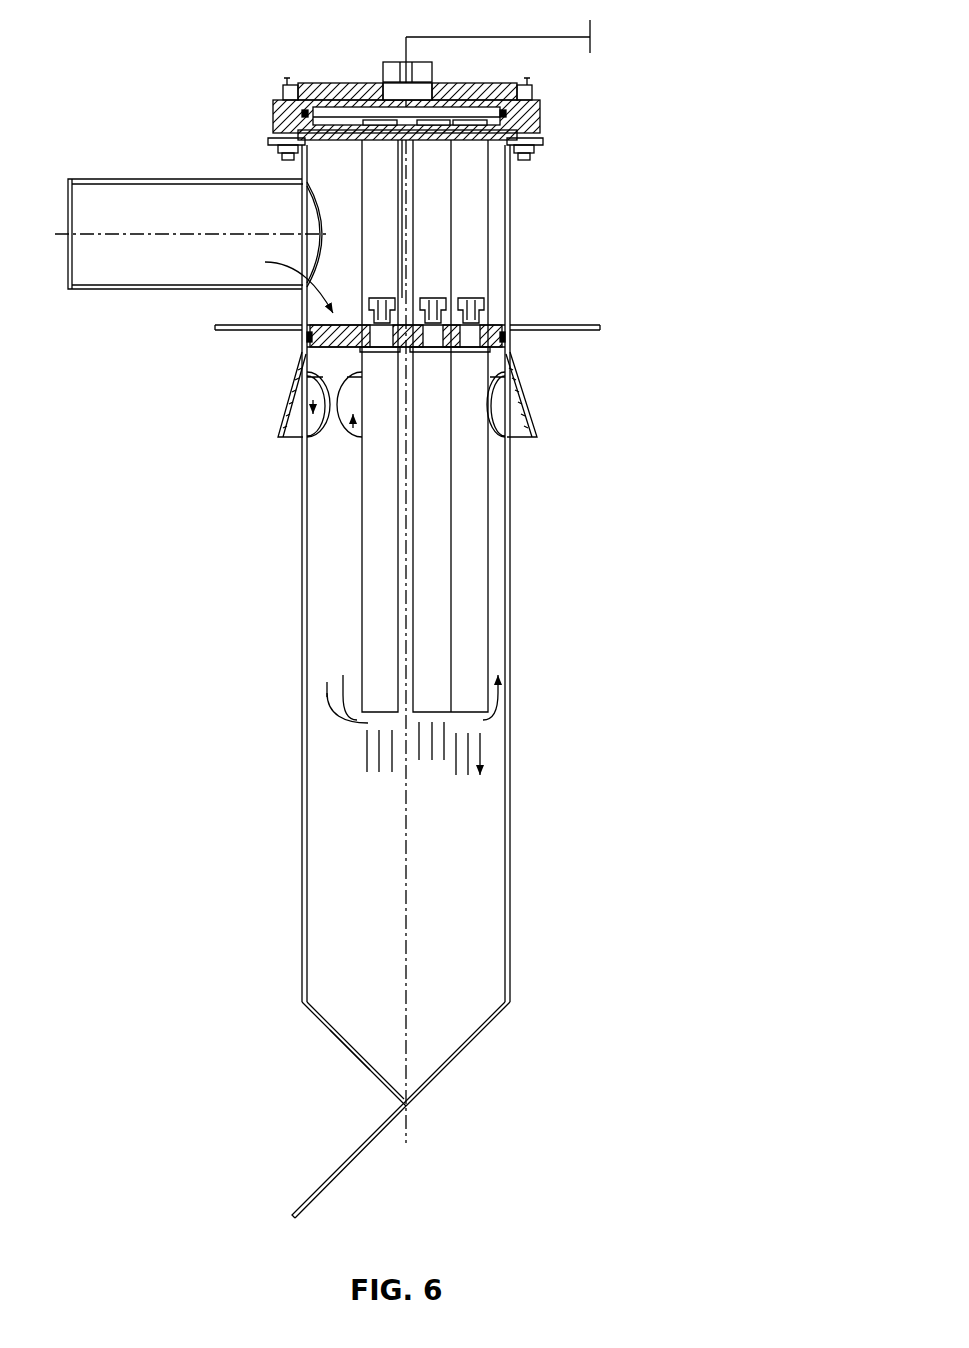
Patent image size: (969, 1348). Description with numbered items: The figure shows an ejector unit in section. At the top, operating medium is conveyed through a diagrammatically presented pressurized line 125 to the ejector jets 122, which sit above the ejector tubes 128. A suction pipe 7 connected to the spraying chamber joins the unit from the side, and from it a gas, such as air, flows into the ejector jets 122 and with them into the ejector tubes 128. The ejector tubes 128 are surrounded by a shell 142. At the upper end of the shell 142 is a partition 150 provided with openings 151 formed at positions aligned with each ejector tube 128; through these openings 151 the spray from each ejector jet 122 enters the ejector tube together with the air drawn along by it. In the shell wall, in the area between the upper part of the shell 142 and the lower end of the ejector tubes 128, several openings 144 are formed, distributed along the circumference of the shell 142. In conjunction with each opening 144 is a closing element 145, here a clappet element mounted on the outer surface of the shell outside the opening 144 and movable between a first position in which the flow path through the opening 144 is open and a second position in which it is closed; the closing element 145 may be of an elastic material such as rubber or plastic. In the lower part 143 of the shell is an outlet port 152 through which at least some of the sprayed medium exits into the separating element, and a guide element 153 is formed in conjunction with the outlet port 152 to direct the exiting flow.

The suction pipe 7 is at (153, 178).
The pressurized line 125 is at (507, 37).
The ejector jet 122 is at (368, 308).
The ejector tubes 128 is at (372, 593).
The shell 142 is at (300, 813).
The lower part of the shell 143 is at (465, 1050).
The opening 144 is at (353, 430).
The closing element 145 is at (280, 410).
The partition 150 is at (330, 340).
The openings 151 is at (375, 337).
The outlet port 152 is at (354, 1062).
The guide element 153 is at (363, 1153).